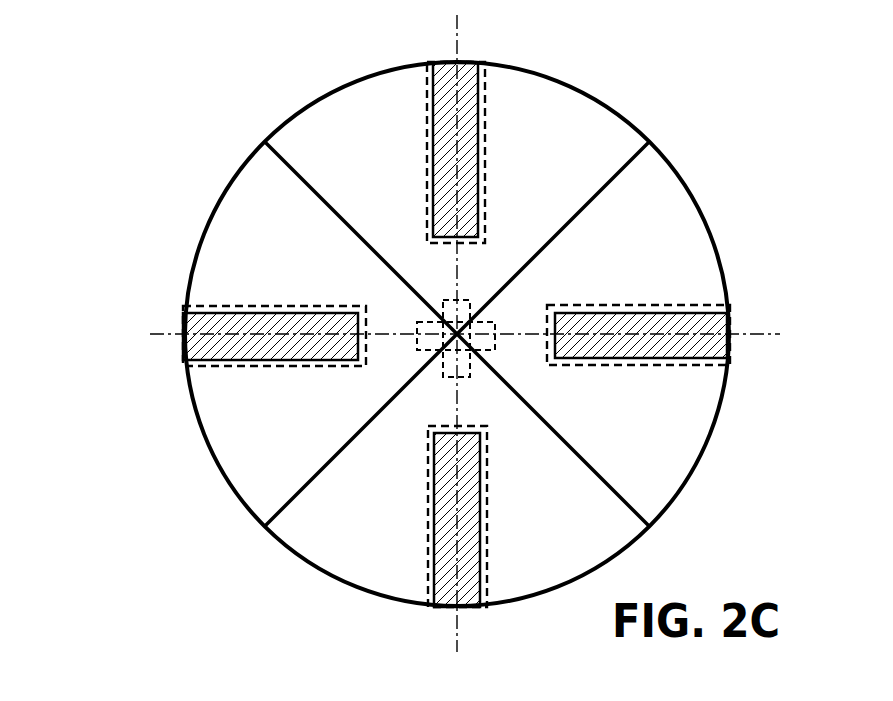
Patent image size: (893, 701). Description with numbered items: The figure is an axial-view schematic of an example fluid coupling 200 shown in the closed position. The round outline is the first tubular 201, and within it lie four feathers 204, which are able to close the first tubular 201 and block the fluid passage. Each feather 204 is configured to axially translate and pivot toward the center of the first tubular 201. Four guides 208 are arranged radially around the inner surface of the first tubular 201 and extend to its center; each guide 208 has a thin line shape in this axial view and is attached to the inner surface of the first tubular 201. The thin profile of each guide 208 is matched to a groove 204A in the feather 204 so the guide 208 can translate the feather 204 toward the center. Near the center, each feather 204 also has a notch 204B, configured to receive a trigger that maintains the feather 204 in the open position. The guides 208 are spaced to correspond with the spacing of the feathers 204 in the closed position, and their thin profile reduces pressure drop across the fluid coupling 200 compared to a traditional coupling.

The fluid coupling 200 is at (103, 91).
The first tubular 201 is at (770, 157).
The feather 204 is at (561, 174).
The groove 204A is at (487, 127).
The notch 204B is at (447, 303).
The guide 208 is at (430, 115).